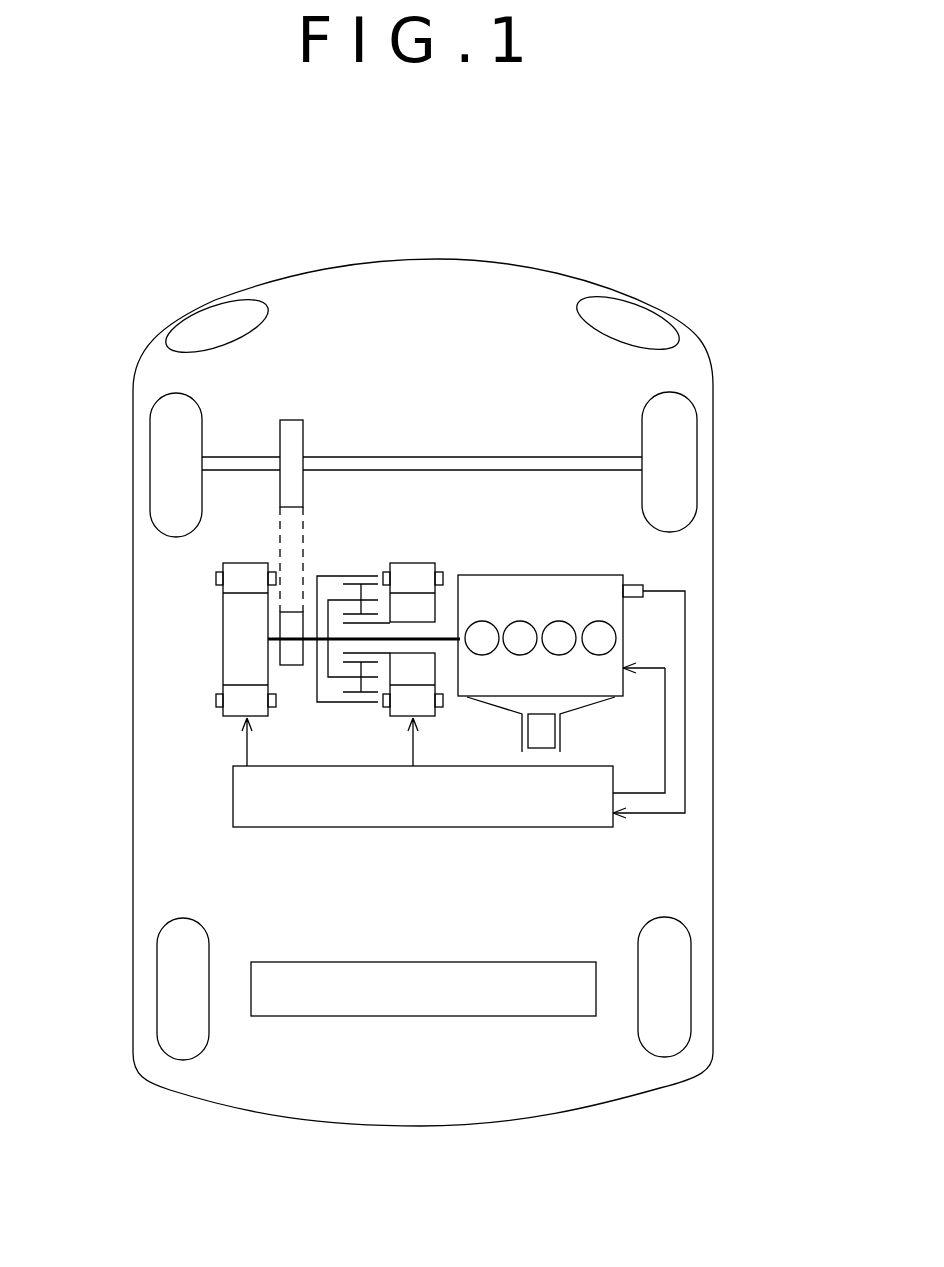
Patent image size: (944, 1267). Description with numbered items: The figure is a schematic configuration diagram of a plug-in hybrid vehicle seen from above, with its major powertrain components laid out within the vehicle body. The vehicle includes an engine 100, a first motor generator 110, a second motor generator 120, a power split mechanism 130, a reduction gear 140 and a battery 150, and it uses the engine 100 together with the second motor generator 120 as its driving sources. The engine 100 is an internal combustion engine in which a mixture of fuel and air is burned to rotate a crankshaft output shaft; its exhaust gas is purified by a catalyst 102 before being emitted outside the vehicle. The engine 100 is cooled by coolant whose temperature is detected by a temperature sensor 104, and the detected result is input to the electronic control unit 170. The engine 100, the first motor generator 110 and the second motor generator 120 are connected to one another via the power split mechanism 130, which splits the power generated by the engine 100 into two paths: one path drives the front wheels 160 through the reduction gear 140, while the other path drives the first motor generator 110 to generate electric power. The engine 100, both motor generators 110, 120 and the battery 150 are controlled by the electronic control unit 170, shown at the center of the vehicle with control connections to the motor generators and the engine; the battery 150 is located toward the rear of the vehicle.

The engine 100 is at (500, 575).
The catalyst 102 is at (553, 732).
The temperature sensor 104 is at (634, 584).
The first motor generator 110 is at (413, 562).
The second motor generator 120 is at (223, 642).
The power split mechanism 130 is at (348, 576).
The reduction gear 140 is at (297, 400).
The battery 150 is at (380, 1016).
The front wheels 160 is at (151, 470).
The electronic control unit 170 is at (233, 808).